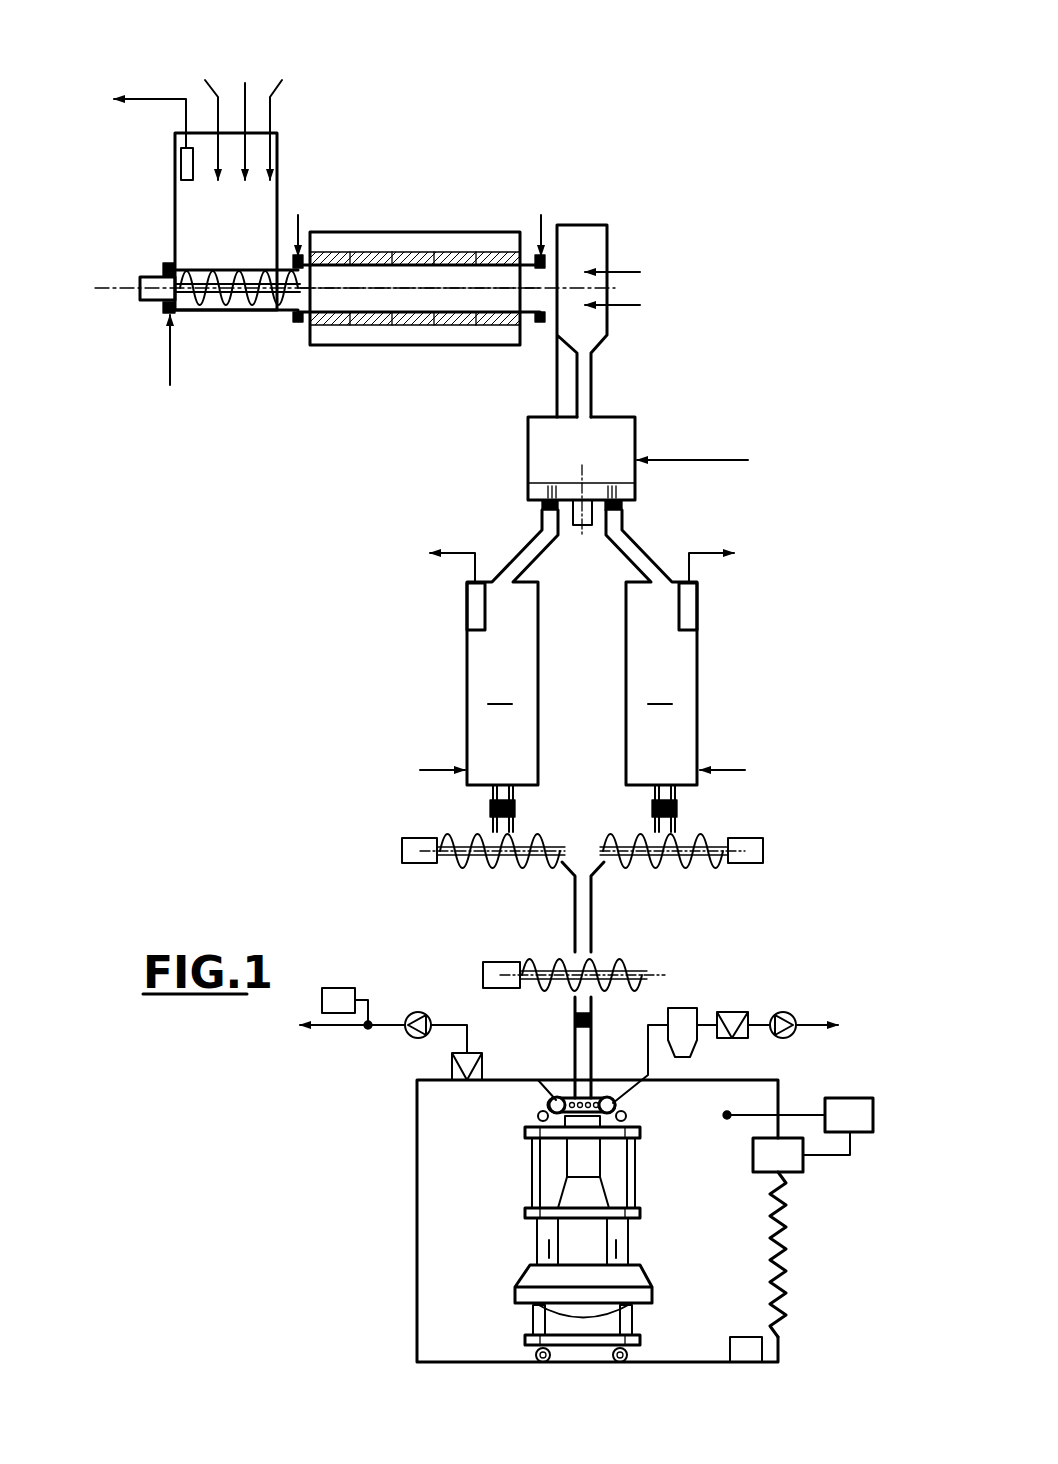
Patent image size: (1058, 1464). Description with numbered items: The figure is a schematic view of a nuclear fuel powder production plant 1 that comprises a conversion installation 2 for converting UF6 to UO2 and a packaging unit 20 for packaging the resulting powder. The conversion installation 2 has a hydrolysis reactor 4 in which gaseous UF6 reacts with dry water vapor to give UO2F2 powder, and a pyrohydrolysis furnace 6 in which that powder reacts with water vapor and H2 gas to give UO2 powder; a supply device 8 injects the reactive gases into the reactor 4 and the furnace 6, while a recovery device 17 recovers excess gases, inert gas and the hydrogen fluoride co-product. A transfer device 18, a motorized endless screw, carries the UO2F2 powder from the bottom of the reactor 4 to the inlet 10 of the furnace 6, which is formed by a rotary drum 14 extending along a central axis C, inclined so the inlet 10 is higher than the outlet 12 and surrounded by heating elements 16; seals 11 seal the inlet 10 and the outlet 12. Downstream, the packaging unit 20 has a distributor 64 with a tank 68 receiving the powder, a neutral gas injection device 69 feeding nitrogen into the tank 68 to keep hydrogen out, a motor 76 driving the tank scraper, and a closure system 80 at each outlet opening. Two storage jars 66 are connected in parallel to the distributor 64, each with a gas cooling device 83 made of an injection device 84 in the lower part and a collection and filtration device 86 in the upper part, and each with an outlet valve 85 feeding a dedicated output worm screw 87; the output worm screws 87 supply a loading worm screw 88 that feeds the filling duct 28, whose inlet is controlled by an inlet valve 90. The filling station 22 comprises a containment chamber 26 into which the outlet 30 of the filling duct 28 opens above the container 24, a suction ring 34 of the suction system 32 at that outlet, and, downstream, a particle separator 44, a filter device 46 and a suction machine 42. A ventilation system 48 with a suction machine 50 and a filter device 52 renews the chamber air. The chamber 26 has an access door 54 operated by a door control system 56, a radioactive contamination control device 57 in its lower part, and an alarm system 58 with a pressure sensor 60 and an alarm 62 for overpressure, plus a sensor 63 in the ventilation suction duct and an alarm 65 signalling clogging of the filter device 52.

The nuclear fuel powder production plant 1 is at (682, 163).
The conversion installation 2 is at (216, 395).
The hydrolysis reactor 4 is at (157, 212).
The pyrohydrolysis furnace 6 is at (322, 355).
The supply device 8 is at (523, 163).
The inlet 10 is at (305, 270).
The seals 11 is at (163, 267).
The outlet 12 is at (540, 268).
The rotary drum 14 is at (378, 326).
The heating elements 16 is at (440, 328).
The recovery device 17 is at (150, 88).
The transfer device 18 is at (203, 318).
The packaging unit 20 is at (808, 575).
The filling station 22 is at (372, 1210).
The container 24 is at (520, 1260).
The containment chamber 26 is at (412, 1136).
The filling duct 28 is at (574, 1040).
The outlet 30 is at (585, 1094).
The suction system 32 is at (722, 1000).
The suction ring 34 is at (552, 1102).
The suction machine 42 is at (790, 1012).
The particle separator 44 is at (682, 1008).
The filter device 46 is at (737, 1012).
The ventilation system 48 is at (388, 980).
The suction machine 50 is at (418, 1012).
The filter device 52 is at (452, 1065).
The access door 54 is at (782, 1258).
The door control system 56 is at (803, 1170).
The radioactive contamination control device 57 is at (762, 1355).
The alarm system 58 is at (838, 1065).
The sensor 60 is at (727, 1119).
The alarm 62 is at (873, 1115).
The sensor 63 is at (368, 1030).
The distributor 64 is at (525, 452).
The alarm 65 is at (333, 988).
The storage jars 66 is at (582, 691).
The tank 68 is at (641, 432).
The neutral gas injection device 69 is at (740, 480).
The motor 76 is at (583, 535).
The closure system 80 is at (545, 520).
The gas cooling device 83 is at (385, 745).
The injection device 84 is at (440, 770).
The outlet valve 85 is at (490, 808).
The collection and filtration device 86 is at (468, 606).
The output worm screws 87 is at (398, 851).
The loading worm screw 88 is at (540, 950).
The inlet valve 90 is at (592, 1020).
The central axis C is at (453, 300).